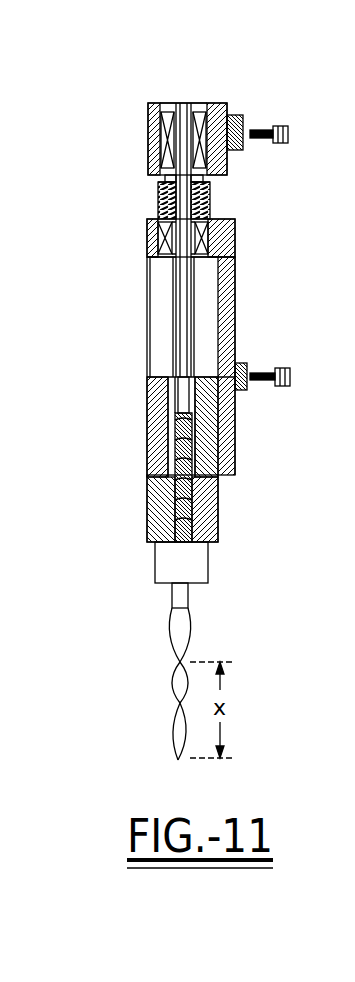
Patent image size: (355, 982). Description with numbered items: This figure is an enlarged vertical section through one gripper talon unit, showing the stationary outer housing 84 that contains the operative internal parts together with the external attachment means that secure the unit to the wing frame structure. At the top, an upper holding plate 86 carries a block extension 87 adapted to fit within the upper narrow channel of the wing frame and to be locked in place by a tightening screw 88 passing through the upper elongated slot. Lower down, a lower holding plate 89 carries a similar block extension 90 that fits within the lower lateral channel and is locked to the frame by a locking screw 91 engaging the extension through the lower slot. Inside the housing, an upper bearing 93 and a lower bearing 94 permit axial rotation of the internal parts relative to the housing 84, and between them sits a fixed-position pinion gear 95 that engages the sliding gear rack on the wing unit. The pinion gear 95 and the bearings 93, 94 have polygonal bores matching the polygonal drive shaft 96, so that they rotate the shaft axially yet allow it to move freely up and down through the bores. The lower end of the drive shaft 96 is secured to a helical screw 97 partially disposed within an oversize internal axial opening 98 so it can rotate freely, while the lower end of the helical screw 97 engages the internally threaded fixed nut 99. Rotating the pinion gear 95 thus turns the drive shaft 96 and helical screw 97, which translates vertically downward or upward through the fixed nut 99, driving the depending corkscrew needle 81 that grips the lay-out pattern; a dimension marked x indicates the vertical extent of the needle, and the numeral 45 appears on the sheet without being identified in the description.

The corkscrew needle 81 is at (178, 663).
The outer housing 84 is at (147, 140).
The upper holding plate 86 is at (224, 112).
The block extension 87 is at (245, 122).
The tightening screw 88 is at (290, 134).
The lower holding plate 89 is at (235, 300).
The block extension 90 is at (244, 363).
The locking screw 91 is at (290, 377).
The upper bearing 93 is at (222, 177).
The lower bearing 94 is at (235, 240).
The pinion gear 95 is at (158, 200).
The polygonal drive shaft 96 is at (176, 325).
The helical screw 97 is at (195, 437).
The internal axial opening 98 is at (168, 440).
The fixed nut 99 is at (218, 518).
The drill assembly 45 is at (341, 484).